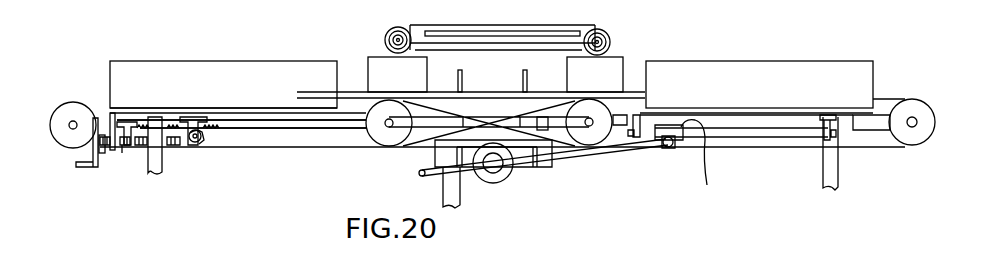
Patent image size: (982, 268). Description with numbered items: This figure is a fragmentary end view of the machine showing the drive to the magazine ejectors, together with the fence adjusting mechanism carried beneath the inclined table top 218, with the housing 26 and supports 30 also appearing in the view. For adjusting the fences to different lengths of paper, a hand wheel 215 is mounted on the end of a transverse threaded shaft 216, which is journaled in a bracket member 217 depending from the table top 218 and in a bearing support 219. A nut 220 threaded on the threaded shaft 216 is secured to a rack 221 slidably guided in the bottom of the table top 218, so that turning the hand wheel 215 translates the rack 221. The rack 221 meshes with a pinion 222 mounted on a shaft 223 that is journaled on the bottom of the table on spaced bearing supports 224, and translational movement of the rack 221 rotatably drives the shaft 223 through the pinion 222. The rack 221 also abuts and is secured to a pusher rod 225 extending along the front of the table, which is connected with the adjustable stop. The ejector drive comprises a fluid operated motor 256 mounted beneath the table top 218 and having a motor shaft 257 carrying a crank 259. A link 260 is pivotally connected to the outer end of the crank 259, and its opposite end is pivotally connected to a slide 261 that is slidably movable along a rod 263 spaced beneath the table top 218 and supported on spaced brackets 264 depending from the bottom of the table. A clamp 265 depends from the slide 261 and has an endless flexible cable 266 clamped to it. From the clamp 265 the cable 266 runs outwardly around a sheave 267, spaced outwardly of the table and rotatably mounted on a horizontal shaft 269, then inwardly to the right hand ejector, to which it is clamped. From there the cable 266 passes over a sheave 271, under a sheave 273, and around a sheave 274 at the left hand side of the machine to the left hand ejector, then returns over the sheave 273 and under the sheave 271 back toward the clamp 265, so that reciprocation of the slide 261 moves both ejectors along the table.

The housing 26 is at (268, 62).
The support block 30 is at (378, 68).
The hand wheel 215 is at (95, 160).
The threaded shaft 216 is at (173, 147).
The bracket member 217 is at (110, 127).
The table top 218 is at (487, 90).
The bearing support 219 is at (115, 150).
The nut 220 is at (128, 143).
The rack 221 is at (143, 130).
The pinion 222 is at (200, 143).
The shaft 223 is at (197, 141).
The bearing supports 224 is at (193, 123).
The pusher rod 225 is at (312, 130).
The fluid operated motor 256 is at (498, 180).
The motor shaft 257 is at (493, 158).
The crank 259 is at (472, 178).
The link 260 is at (582, 153).
The slide 261 is at (715, 187).
The rod 263 is at (773, 135).
The brackets 264 is at (648, 130).
The clamp 265 is at (670, 147).
The endless flexible cable 266 is at (805, 143).
The sheave 267 is at (913, 108).
The horizontal shaft 269 is at (915, 127).
The sheave 271 is at (607, 130).
The sheave 273 is at (389, 142).
The sheave 274 is at (63, 137).